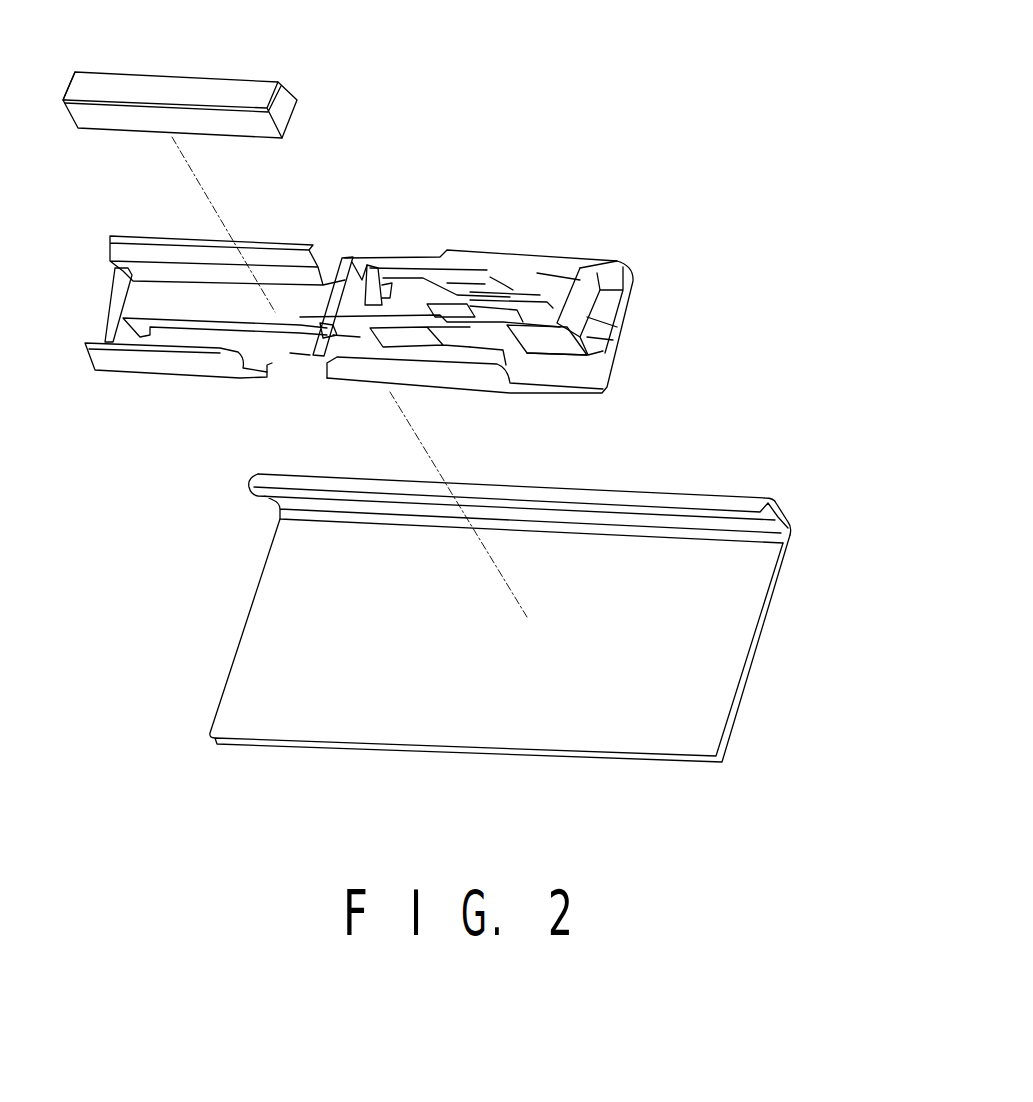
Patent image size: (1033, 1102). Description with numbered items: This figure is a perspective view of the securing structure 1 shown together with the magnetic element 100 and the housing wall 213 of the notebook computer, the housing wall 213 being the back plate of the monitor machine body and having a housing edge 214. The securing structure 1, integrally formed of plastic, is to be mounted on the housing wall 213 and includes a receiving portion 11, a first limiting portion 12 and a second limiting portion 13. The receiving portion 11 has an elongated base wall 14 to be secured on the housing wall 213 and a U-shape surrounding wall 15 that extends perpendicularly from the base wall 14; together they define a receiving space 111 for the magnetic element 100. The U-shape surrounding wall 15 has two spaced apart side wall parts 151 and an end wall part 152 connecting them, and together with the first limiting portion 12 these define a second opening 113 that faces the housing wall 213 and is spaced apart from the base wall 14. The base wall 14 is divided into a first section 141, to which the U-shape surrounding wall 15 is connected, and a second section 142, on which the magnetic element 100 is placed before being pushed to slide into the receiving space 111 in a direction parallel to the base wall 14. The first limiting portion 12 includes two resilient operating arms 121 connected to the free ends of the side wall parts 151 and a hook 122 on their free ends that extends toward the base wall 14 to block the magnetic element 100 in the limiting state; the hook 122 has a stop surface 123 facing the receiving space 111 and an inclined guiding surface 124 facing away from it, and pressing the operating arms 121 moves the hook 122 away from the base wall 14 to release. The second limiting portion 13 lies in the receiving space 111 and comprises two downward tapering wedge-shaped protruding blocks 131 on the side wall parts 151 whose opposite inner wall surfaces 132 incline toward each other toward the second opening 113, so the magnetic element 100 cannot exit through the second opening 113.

The securing structure 1 is at (634, 255).
The receiving portion 11 is at (578, 249).
The receiving space 111 is at (542, 267).
The second opening 113 is at (577, 267).
The first limiting portion 12 is at (333, 259).
The operating arm 121 is at (373, 267).
The hook 122 is at (355, 272).
The stop surface 123 is at (356, 332).
The inclined guiding surface 124 is at (322, 330).
The second limiting portion 13 is at (463, 267).
The protruding block 131 is at (530, 267).
The inner wall surface 132 is at (485, 267).
The base wall 14 is at (277, 353).
The first section 141 is at (407, 267).
The second section 142 is at (187, 287).
The U-shape surrounding wall 15 is at (564, 356).
The side wall part 151 is at (627, 264).
The end wall part 152 is at (588, 317).
The magnetic element 100 is at (180, 97).
The housing wall 213 is at (748, 688).
The housing edge 214 is at (778, 516).